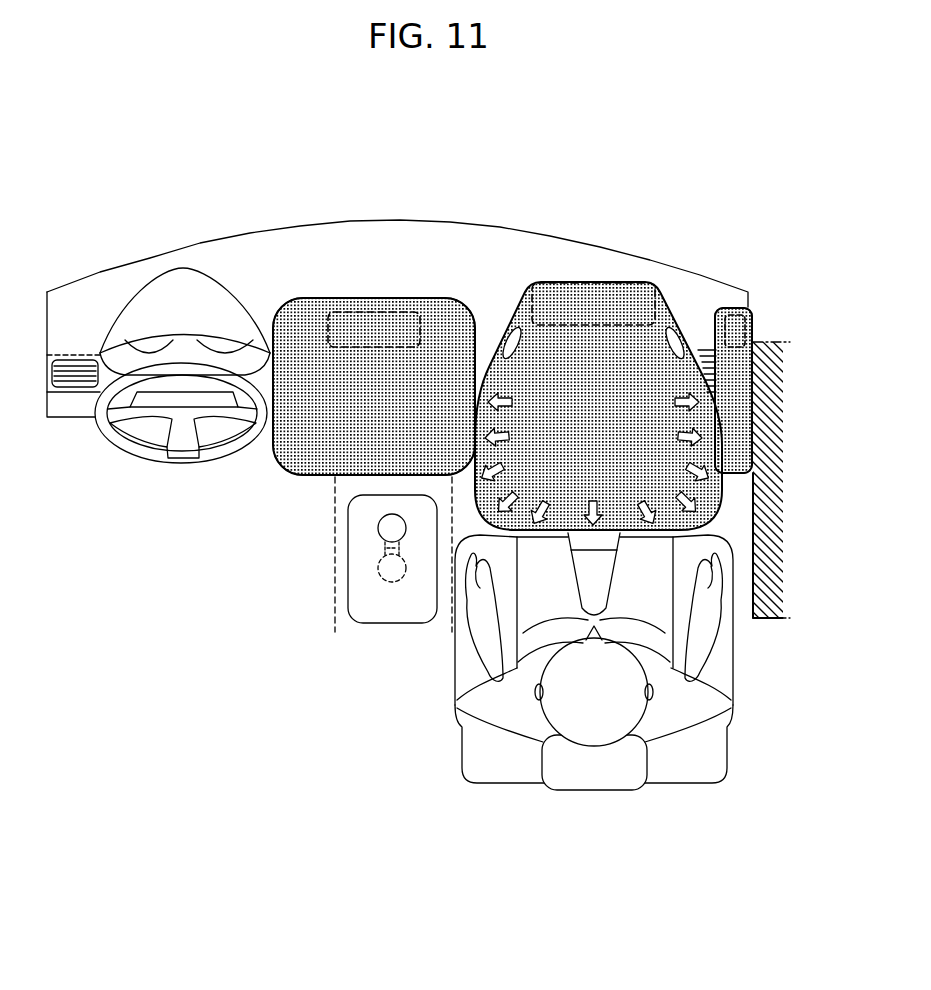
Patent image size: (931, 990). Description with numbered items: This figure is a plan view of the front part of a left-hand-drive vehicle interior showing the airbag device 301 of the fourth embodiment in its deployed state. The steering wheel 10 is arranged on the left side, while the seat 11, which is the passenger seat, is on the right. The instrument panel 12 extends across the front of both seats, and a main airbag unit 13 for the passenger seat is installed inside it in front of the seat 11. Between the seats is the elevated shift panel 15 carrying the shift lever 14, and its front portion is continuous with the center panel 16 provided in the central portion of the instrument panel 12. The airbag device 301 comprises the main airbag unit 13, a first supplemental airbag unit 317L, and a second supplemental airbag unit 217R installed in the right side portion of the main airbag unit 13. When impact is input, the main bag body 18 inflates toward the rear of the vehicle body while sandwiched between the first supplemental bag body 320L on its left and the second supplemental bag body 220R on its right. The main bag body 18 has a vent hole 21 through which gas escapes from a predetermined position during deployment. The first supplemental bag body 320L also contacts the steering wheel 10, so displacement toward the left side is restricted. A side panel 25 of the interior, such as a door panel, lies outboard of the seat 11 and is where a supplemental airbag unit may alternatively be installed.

The steering wheel 10 is at (137, 447).
The seat 11 is at (678, 765).
The instrument panel 12 is at (293, 257).
The main airbag unit 13 is at (669, 296).
The shift lever 14 is at (390, 533).
The shift panel 15 is at (353, 602).
The center panel 16 is at (327, 425).
The main bag body 18 is at (657, 473).
The vent hole 21 is at (513, 330).
The side panel 25 is at (731, 585).
The airbag device 301 is at (595, 272).
The first supplemental airbag unit 317L is at (369, 288).
The first supplemental bag body 320L is at (453, 325).
The second supplemental airbag unit 217R is at (768, 366).
The second supplemental bag body 220R is at (748, 422).